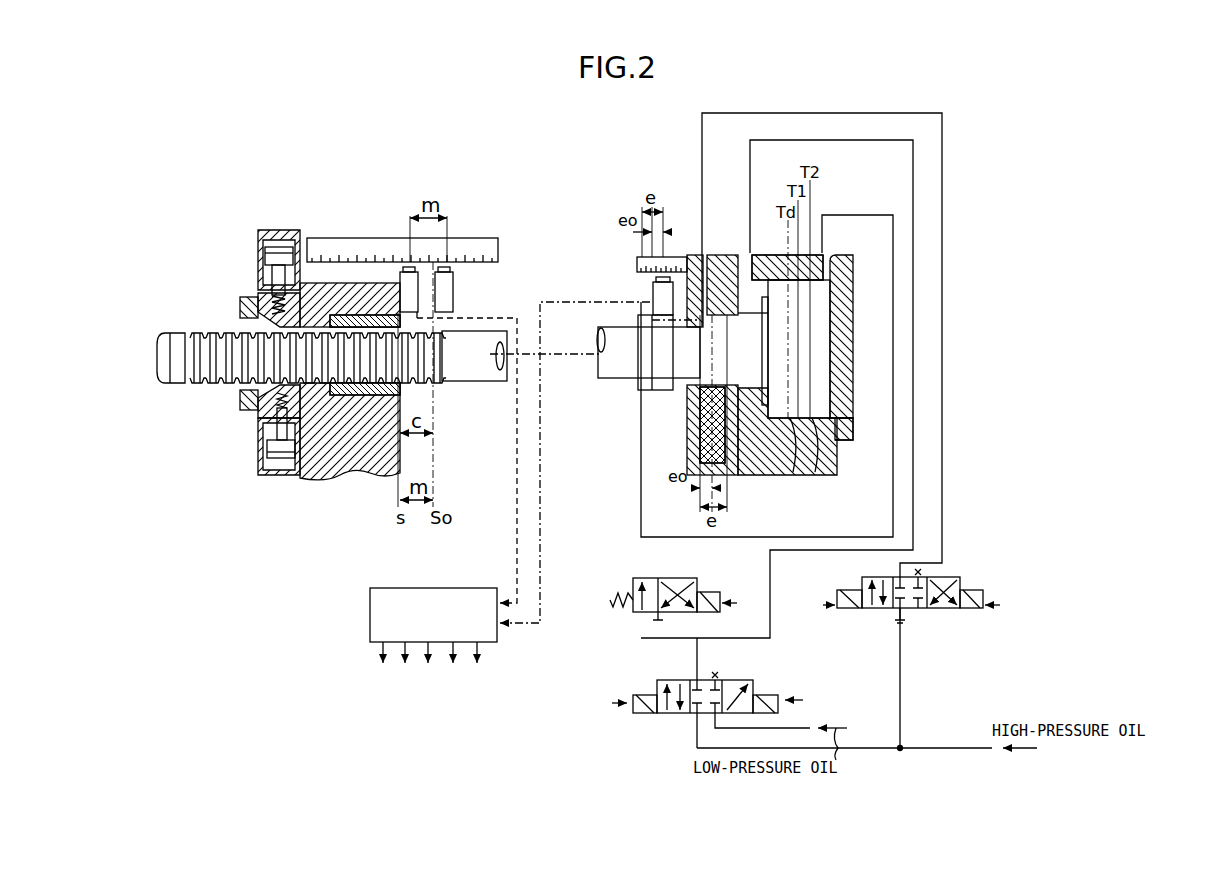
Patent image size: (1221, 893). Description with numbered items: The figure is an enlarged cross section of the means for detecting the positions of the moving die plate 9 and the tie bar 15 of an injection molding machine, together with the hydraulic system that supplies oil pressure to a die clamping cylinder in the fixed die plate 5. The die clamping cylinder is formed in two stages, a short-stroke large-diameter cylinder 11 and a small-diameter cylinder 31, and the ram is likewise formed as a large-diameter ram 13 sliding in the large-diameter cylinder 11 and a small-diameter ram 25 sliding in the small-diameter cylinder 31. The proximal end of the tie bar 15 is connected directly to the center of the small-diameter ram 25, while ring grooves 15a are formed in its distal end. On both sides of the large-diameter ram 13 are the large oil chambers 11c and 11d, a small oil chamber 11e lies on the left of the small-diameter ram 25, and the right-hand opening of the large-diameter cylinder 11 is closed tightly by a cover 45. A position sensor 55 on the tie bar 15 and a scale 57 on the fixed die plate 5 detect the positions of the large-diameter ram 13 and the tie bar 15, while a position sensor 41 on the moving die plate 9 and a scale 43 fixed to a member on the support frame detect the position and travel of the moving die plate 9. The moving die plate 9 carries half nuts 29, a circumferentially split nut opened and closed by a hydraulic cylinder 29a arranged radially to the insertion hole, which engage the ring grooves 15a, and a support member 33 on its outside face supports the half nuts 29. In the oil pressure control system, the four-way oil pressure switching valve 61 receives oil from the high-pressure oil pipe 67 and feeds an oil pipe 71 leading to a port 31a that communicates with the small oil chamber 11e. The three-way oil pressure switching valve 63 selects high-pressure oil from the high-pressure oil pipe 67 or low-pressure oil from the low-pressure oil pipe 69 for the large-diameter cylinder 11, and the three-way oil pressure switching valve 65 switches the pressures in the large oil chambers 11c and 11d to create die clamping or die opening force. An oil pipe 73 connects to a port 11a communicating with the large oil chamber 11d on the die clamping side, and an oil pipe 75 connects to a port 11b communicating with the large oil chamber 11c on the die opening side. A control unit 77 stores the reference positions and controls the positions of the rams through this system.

The fixed die plate 5 is at (692, 253).
The moving die plate 9 is at (320, 475).
The large-diameter cylinder 11 is at (847, 470).
The port 11a is at (753, 250).
The port 11b is at (827, 252).
The large oil chamber 11c is at (830, 390).
The large oil chamber 11d is at (765, 477).
The small oil chamber 11e is at (653, 318).
The large-diameter ram 13 is at (805, 477).
The tie bar 15 is at (615, 380).
The ring grooves 15a is at (200, 330).
The small-diameter ram 25 is at (690, 398).
The half nuts 29 is at (257, 293).
The hydraulic cylinder 29a is at (258, 443).
The small-diameter cylinder 31 is at (683, 397).
The port 31a is at (713, 253).
The support member 33 is at (240, 400).
The position sensor 41 is at (418, 297).
The scale 43 is at (363, 238).
The cover 45 is at (843, 440).
The position sensor 55 is at (655, 392).
The scale 57 is at (637, 263).
The oil pressure switching valve 61 is at (960, 577).
The oil pressure switching valve 63 is at (747, 680).
The oil pressure switching valve 65 is at (678, 583).
The high-pressure oil pipe 67 is at (915, 748).
The low-pressure oil pipe 69 is at (790, 725).
The oil pipe 71 is at (943, 335).
The oil pipe 73 is at (915, 375).
The oil pipe 75 is at (893, 418).
The control unit 77 is at (370, 615).